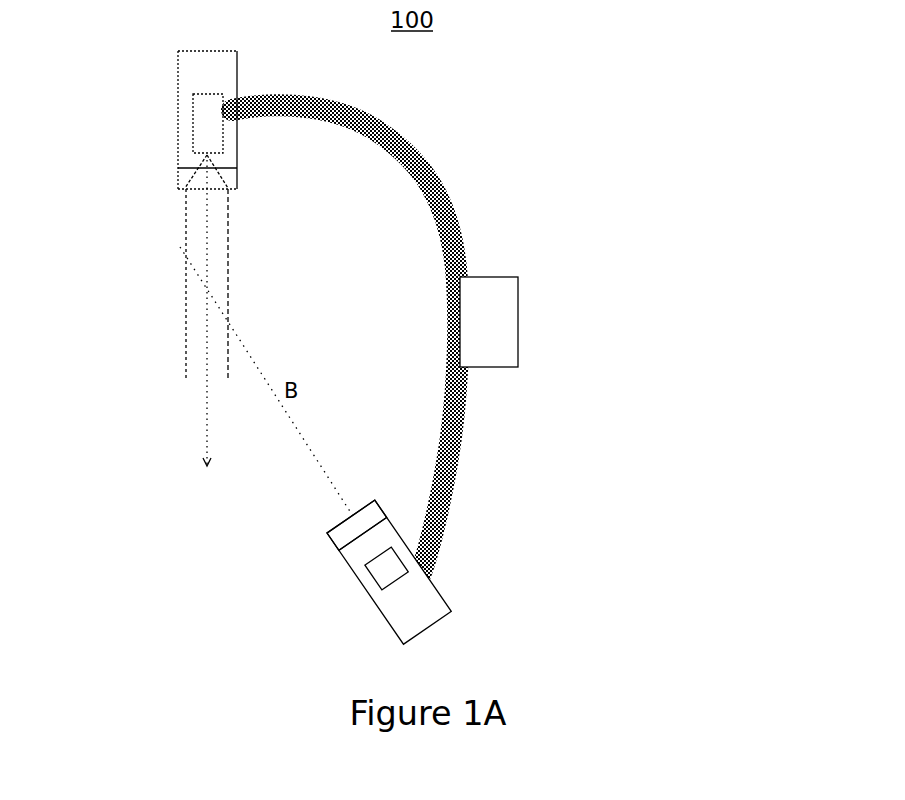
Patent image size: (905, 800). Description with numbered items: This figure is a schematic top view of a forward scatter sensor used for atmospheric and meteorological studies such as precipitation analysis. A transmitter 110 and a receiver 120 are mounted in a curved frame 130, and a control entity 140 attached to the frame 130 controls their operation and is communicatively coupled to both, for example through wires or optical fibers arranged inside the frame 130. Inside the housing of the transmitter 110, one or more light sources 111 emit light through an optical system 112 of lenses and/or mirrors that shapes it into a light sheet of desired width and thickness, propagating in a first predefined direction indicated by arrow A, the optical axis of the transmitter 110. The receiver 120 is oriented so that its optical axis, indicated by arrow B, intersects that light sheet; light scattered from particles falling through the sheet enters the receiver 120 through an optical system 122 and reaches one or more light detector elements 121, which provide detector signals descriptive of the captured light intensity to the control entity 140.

The transmitter 110 is at (178, 83).
The light sources 111 is at (193, 128).
The optical system 112 is at (178, 184).
The receiver 120 is at (447, 602).
The light detector elements 121 is at (367, 573).
The optical system 122 is at (327, 537).
The frame 130 is at (452, 463).
The control entity 140 is at (518, 295).